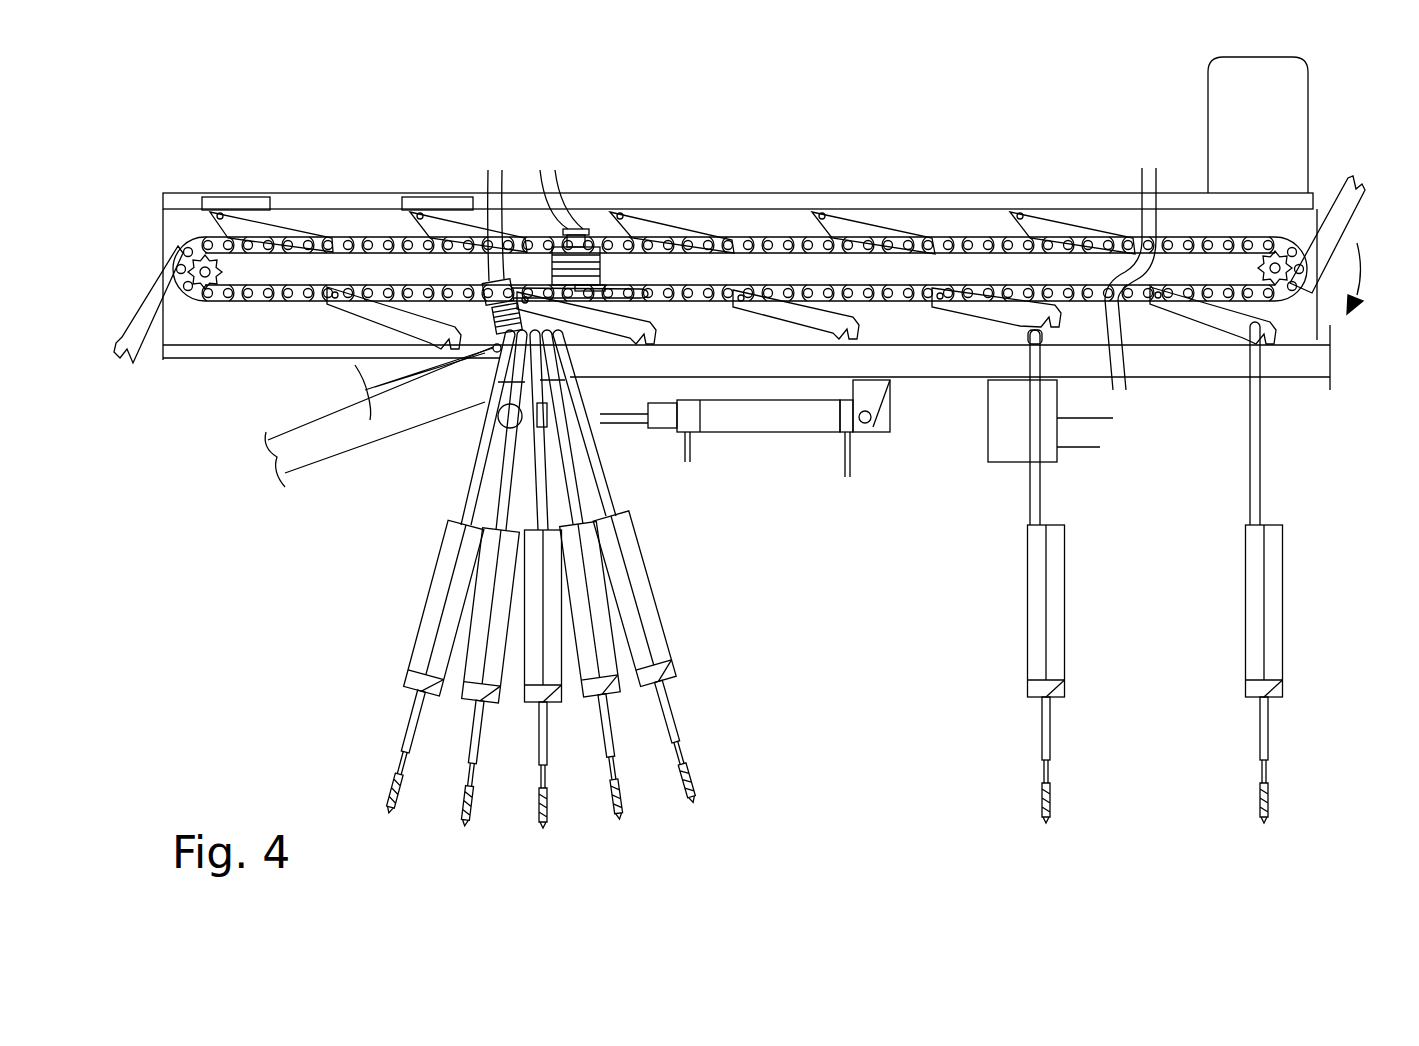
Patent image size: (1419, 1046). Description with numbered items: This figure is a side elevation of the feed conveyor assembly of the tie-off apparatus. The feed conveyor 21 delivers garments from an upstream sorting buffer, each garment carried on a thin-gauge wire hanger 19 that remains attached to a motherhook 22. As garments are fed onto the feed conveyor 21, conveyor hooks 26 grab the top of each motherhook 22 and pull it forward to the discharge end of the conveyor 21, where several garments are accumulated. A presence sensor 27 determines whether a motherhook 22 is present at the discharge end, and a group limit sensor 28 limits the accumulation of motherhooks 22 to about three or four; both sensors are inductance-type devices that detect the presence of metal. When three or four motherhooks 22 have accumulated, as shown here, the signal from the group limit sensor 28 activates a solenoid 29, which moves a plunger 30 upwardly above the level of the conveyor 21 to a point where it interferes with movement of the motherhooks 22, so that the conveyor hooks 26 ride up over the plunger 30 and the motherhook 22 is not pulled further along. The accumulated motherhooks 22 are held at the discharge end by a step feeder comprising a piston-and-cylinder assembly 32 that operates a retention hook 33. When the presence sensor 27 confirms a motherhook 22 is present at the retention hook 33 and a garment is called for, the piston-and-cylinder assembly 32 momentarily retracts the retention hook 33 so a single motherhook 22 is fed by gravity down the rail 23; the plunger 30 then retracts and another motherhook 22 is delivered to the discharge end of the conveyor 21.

The thin-gauge wire hanger 19 is at (472, 720).
The feed conveyor 21 is at (735, 200).
The motherhook 22 is at (595, 492).
The rail 23 is at (262, 454).
The conveyor hook 26 is at (1058, 222).
The presence sensor 27 is at (473, 316).
The group limit sensor 28 is at (597, 268).
The solenoid 29 is at (1012, 445).
The plunger 30 is at (1022, 330).
The piston-and-cylinder assembly 32 is at (725, 423).
The retention hook 33 is at (372, 382).